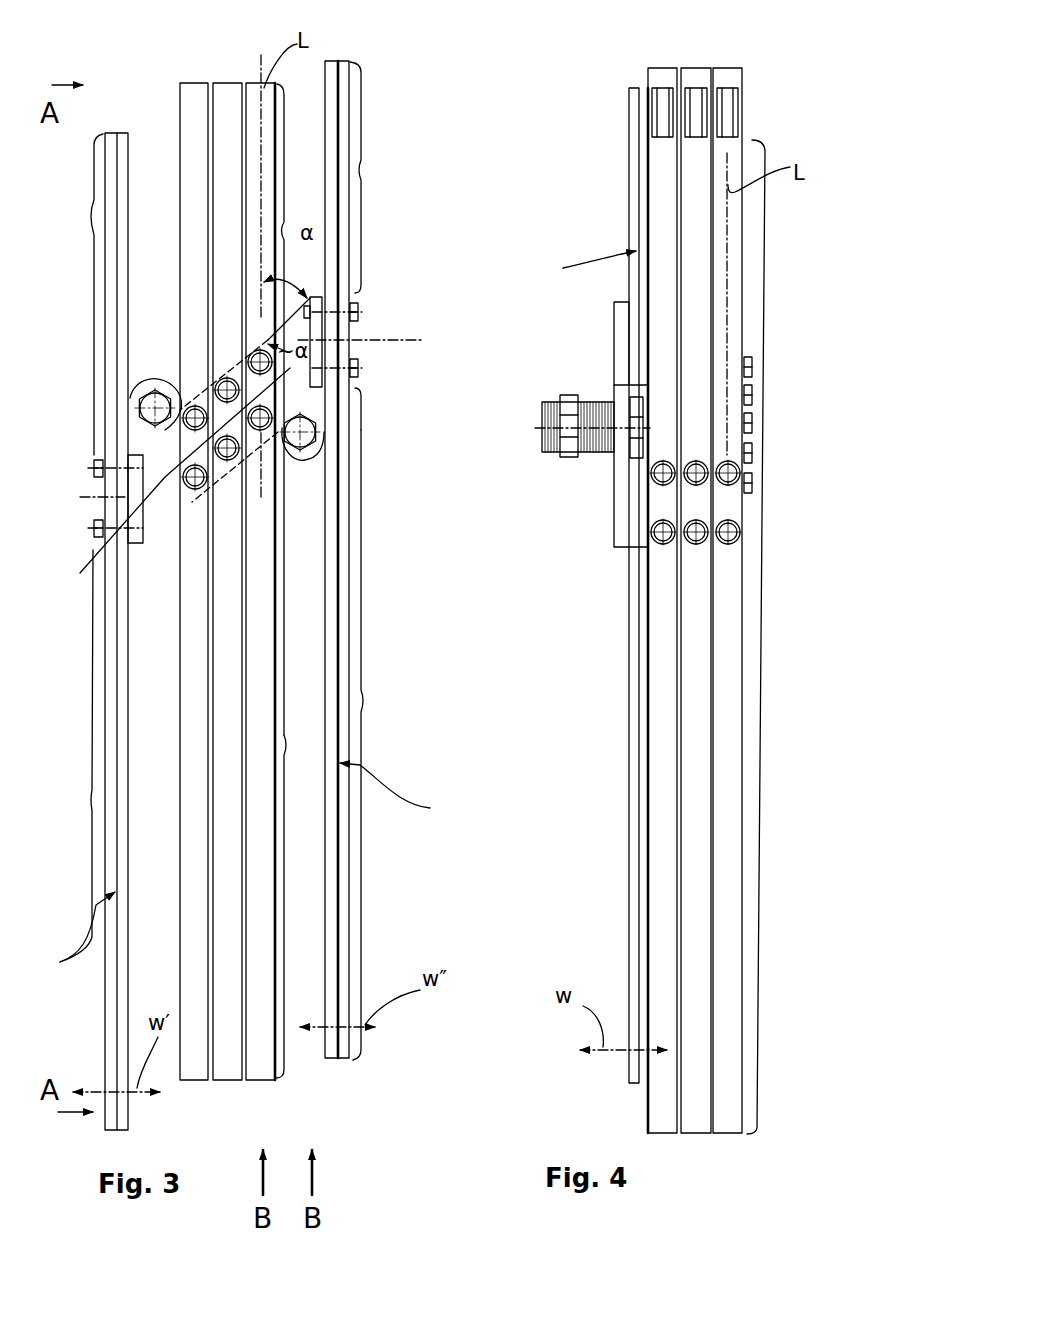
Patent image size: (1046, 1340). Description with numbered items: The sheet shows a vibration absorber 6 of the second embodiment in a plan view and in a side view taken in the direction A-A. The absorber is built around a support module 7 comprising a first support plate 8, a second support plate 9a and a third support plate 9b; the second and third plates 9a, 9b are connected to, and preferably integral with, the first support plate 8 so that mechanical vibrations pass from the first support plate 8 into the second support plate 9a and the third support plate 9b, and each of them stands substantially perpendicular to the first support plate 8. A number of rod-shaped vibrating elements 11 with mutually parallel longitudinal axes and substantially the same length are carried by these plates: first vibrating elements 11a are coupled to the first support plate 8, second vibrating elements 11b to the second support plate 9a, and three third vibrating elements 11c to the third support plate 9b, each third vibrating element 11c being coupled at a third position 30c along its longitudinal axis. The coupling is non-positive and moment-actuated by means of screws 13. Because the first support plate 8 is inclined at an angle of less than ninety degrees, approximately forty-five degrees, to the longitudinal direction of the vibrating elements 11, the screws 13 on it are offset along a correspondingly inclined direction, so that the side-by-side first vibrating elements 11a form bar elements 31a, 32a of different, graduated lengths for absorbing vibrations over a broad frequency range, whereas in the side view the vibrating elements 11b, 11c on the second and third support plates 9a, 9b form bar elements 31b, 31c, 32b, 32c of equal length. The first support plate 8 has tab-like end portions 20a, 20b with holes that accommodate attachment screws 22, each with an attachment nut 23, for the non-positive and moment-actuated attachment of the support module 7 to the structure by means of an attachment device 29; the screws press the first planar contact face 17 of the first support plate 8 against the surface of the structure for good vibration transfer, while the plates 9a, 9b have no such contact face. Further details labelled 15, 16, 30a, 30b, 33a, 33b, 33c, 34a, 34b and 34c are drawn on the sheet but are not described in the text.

In FIG. 3, the vibration absorber 6 is at (452, 912).
In FIG. 4, the vibration absorber 6 is at (546, 1036).
In FIG. 3, the support module 7 is at (378, 448).
In FIG. 4, the support module 7 is at (605, 550).
In FIG. 3, the first support plate 8 is at (260, 342).
In FIG. 4, the first support plate 8 is at (610, 410).
In FIG. 3, the second support plate 9a is at (105, 563).
In FIG. 4, the second support plate 9a is at (640, 540).
In FIG. 3, the third support plate 9b is at (322, 330).
In FIG. 3, the vibrating elements 11 is at (190, 1082).
In FIG. 3, the first vibrating elements 11a is at (252, 90).
In FIG. 4, the first vibrating elements 11a is at (640, 1086).
In FIG. 3, the second vibrating elements 11b is at (130, 122).
In FIG. 4, the second vibrating elements 11b is at (729, 1133).
In FIG. 3, the third vibrating element 11c is at (326, 1067).
In FIG. 4, the third vibrating element 11c is at (668, 74).
In FIG. 3, the screws 13 is at (360, 308).
In FIG. 4, the screws 13 is at (753, 363).
In FIG. 3, the guide surface 15 is at (112, 697).
In FIG. 4, the guide surface 15 is at (633, 140).
In FIG. 3, the guide direction 16 is at (242, 873).
In FIG. 4, the guide direction 16 is at (585, 268).
In FIG. 4, the first planar contact face 17 is at (608, 470).
In FIG. 3, the end portion 20a is at (154, 386).
In FIG. 3, the end portion 20b is at (318, 452).
In FIG. 3, the attachment screw 22 is at (150, 405).
In FIG. 4, the attachment screw 22 is at (578, 465).
In FIG. 4, the attachment nut 23 is at (567, 392).
In FIG. 4, the attachment device 29 is at (502, 563).
In FIG. 3, the fastening bracket 30a is at (363, 395).
In FIG. 3, the fastening bracket 30b is at (72, 500).
In FIG. 3, the third position 30c is at (385, 340).
In FIG. 3, the bar element 31a is at (287, 228).
In FIG. 3, the bar element 31b is at (92, 232).
In FIG. 4, the bar element 31b is at (783, 312).
In FIG. 3, the bar element 31c is at (363, 167).
In FIG. 3, the bar element 32a is at (285, 740).
In FIG. 3, the bar element 32b is at (92, 793).
In FIG. 4, the bar element 32b is at (754, 855).
In FIG. 3, the bar element 32c is at (363, 700).
In FIG. 3, the upper end face 33a is at (266, 92).
In FIG. 3, the upper end face 33b is at (138, 147).
In FIG. 3, the upper end face 33c is at (370, 76).
In FIG. 3, the lower end face 34a is at (275, 1090).
In FIG. 3, the lower end face 34b is at (134, 1125).
In FIG. 3, the lower end face 34c is at (367, 1066).